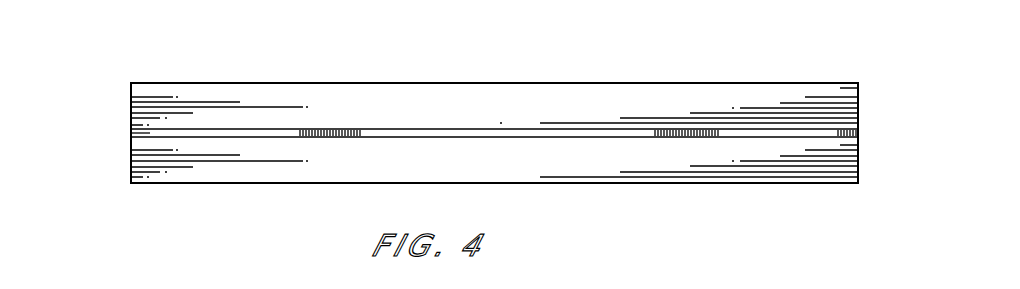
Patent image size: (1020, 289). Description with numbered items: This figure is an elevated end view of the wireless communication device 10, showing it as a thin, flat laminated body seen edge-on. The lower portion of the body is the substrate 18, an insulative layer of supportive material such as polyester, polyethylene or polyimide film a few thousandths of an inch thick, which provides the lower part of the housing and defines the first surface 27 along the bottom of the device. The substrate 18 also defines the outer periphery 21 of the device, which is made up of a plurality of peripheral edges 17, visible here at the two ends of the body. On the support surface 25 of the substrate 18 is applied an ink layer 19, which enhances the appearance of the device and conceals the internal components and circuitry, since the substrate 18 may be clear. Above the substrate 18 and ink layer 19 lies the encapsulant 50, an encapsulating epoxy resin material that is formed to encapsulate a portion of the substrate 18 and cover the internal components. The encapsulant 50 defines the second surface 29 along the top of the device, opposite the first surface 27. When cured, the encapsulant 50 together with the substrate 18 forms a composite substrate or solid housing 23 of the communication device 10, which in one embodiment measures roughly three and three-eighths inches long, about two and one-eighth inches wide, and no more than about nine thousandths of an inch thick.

The wireless communication device 10 is at (80, 88).
The peripheral edges 17 is at (131, 164).
The substrate 18 is at (180, 173).
The ink layer 19 is at (148, 135).
The outer periphery 21 is at (858, 95).
The housing 23 is at (883, 105).
The support surface 25 is at (395, 128).
The first surface 27 is at (298, 185).
The second surface 29 is at (298, 84).
The encapsulant 50 is at (193, 95).